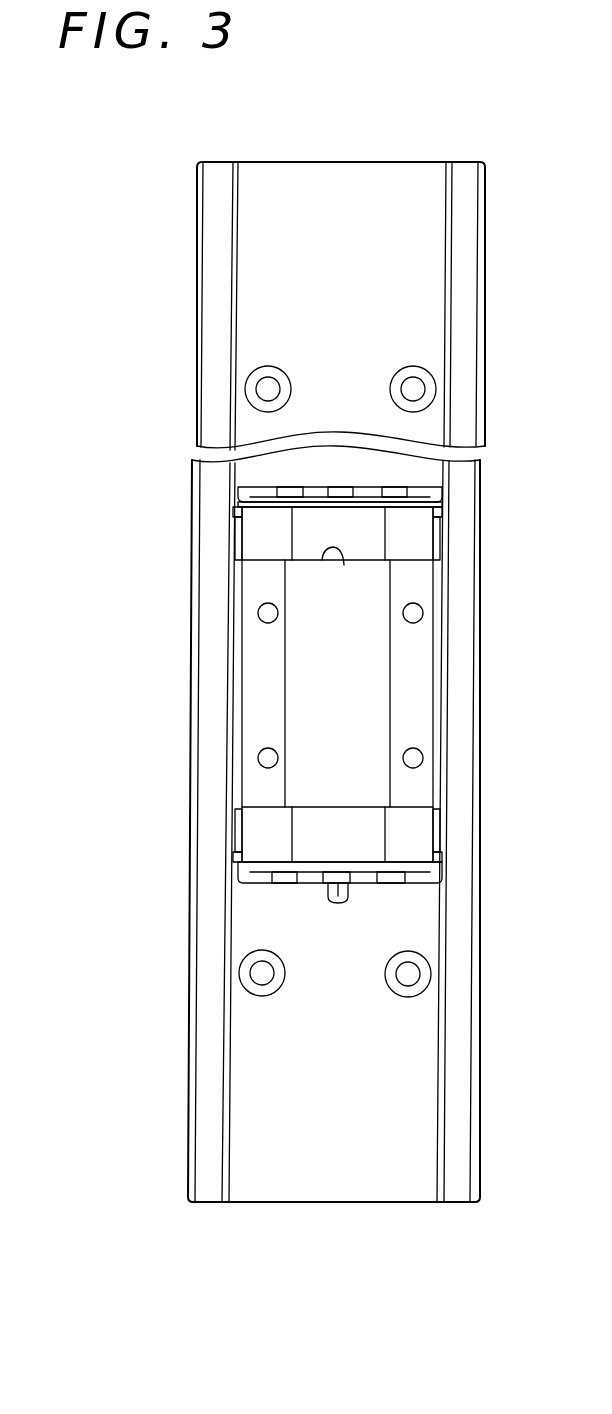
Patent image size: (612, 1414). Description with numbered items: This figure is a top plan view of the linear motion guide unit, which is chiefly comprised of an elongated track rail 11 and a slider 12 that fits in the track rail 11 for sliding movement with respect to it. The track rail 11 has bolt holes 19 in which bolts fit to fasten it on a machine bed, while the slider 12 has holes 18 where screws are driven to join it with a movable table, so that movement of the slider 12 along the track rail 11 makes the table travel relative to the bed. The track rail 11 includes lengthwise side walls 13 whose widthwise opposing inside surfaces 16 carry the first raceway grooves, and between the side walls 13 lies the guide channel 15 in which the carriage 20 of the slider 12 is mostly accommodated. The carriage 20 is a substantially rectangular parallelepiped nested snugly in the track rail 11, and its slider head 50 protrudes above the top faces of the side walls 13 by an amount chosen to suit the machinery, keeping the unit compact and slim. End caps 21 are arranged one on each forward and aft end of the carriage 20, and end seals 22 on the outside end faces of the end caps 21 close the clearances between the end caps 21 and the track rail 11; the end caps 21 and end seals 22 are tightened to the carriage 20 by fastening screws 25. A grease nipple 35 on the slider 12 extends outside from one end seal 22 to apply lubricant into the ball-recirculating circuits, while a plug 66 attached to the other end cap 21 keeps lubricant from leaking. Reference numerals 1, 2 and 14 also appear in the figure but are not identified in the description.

The end plate 1 is at (265, 540).
The return passage cover 2 is at (344, 565).
The track rail 11 is at (492, 232).
The slider 12 is at (224, 532).
The side walls 13 is at (218, 208).
The rail top face 14 is at (336, 205).
The guide channel 15 is at (353, 282).
The inside surfaces 16 is at (240, 192).
The holes 18 is at (260, 612).
The bolt holes 19 is at (258, 389).
The carriage 20 is at (305, 655).
The end caps 21 is at (415, 550).
The end seals 22 is at (440, 497).
The fastening screws 25 is at (285, 490).
The grease nipple 35 is at (340, 893).
The slider head 50 is at (350, 652).
The plug 66 is at (340, 488).